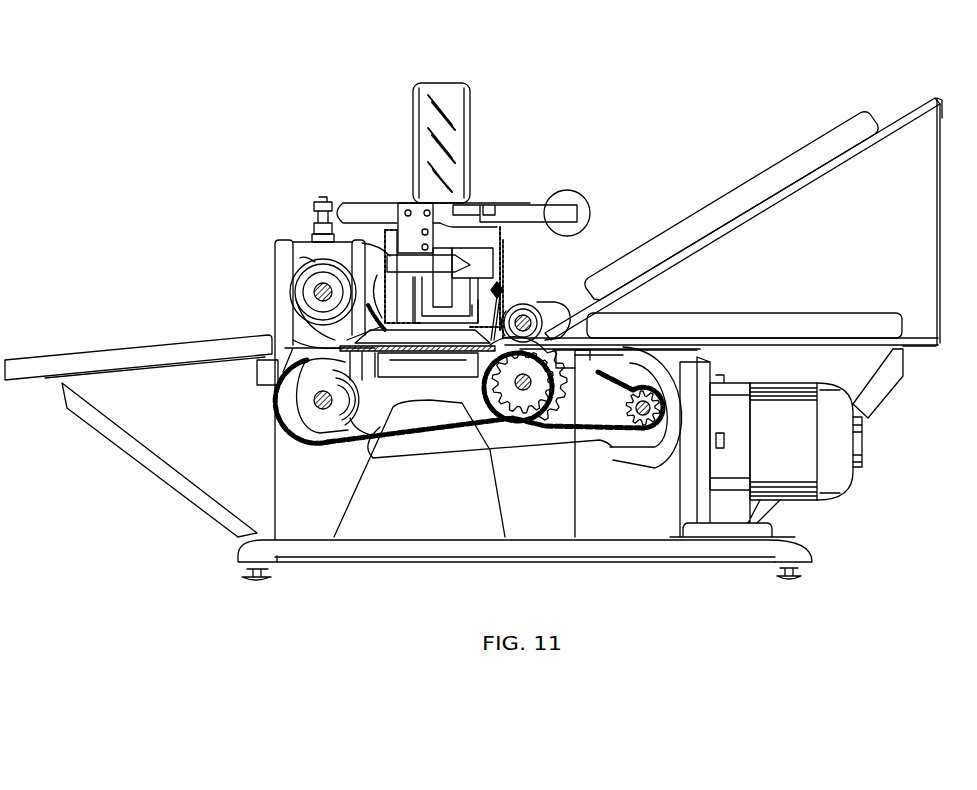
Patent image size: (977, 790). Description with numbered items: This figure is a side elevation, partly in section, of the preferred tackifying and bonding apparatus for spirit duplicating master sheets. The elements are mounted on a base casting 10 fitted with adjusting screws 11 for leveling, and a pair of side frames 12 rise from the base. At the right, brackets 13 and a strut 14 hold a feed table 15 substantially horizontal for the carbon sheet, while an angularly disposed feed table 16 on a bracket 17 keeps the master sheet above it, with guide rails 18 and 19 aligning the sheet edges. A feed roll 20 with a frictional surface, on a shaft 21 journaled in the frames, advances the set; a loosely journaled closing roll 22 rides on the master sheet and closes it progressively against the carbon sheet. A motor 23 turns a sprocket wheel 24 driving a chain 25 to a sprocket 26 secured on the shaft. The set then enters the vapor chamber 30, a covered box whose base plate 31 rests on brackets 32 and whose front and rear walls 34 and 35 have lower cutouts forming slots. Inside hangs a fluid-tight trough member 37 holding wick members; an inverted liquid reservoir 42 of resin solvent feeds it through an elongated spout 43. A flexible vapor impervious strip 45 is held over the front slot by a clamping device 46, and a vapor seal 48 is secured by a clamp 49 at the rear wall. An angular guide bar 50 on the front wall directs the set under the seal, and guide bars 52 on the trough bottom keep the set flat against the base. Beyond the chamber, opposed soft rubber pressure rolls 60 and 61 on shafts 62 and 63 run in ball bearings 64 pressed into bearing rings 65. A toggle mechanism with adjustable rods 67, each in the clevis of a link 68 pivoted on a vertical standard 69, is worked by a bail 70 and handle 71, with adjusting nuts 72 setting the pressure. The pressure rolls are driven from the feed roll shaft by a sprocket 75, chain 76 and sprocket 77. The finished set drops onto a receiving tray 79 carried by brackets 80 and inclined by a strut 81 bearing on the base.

The base casting 10 is at (620, 558).
The adjusting screws 11 is at (245, 573).
The side frames 12 is at (280, 486).
The brackets 13 is at (576, 358).
The strut 14 is at (882, 395).
The feed table 15 is at (775, 346).
The feed table 16 is at (772, 205).
The bracket 17 is at (940, 236).
The guide rail 18 is at (838, 316).
The guide rail 19 is at (838, 134).
The feed roll 20 is at (563, 305).
The shaft 21 is at (560, 382).
The closing roll 22 is at (540, 312).
The motor 23 is at (805, 380).
The sprocket wheel 24 is at (628, 405).
The chain 25 is at (607, 448).
The sprocket 26 is at (562, 428).
The vapor chamber 30 is at (533, 244).
The base plate 31 is at (376, 374).
The brackets 32 is at (398, 368).
The front wall 34 is at (508, 282).
The rear wall 35 is at (384, 290).
The trough member 37 is at (420, 290).
The liquid reservoir 42 is at (467, 112).
The spout 43 is at (496, 258).
The vapor impervious strip 45 is at (470, 305).
The clamping device 46 is at (491, 292).
The vapor seal 48 is at (360, 340).
The clamp 49 is at (428, 302).
The guide bar 50 is at (505, 312).
The guide bars 52 is at (405, 338).
The pressure roll 60 is at (275, 305).
The pressure roll 61 is at (296, 330).
The shaft 62 is at (315, 290).
The shaft 63 is at (312, 435).
The ball bearings 64 is at (315, 290).
The bearing rings 65 is at (320, 252).
The adjustable rods 67 is at (312, 222).
The link 68 is at (370, 203).
The vertical standard 69 is at (408, 228).
The bail 70 is at (538, 205).
The handle 71 is at (572, 196).
The adjusting nuts 72 is at (323, 197).
The sprocket 75 is at (484, 386).
The chain 76 is at (372, 458).
The sprocket 77 is at (360, 428).
The receiving tray 79 is at (108, 380).
The brackets 80 is at (252, 378).
The strut 81 is at (145, 466).